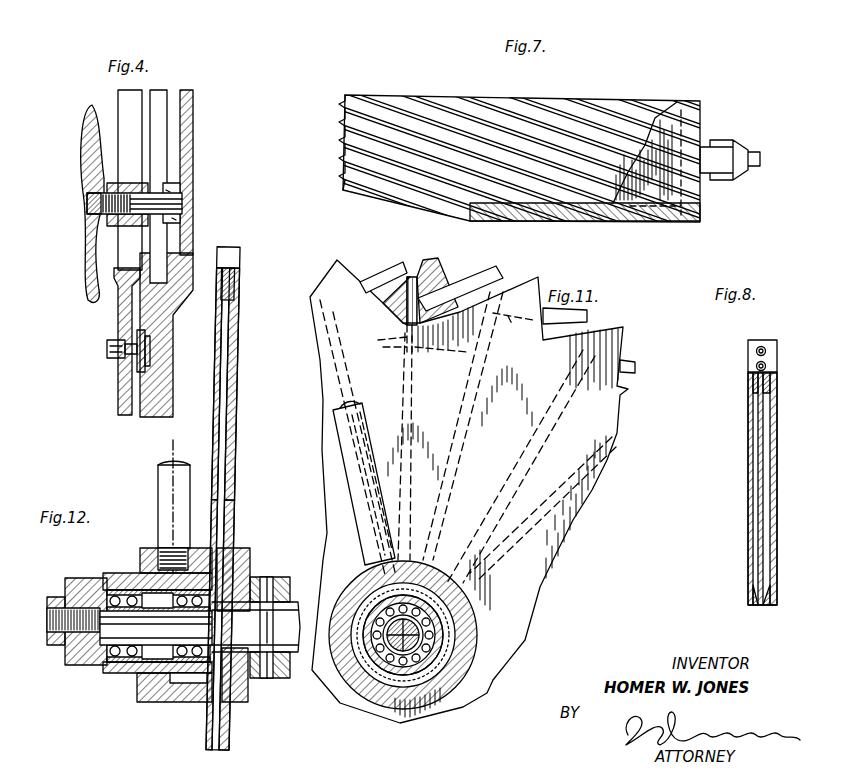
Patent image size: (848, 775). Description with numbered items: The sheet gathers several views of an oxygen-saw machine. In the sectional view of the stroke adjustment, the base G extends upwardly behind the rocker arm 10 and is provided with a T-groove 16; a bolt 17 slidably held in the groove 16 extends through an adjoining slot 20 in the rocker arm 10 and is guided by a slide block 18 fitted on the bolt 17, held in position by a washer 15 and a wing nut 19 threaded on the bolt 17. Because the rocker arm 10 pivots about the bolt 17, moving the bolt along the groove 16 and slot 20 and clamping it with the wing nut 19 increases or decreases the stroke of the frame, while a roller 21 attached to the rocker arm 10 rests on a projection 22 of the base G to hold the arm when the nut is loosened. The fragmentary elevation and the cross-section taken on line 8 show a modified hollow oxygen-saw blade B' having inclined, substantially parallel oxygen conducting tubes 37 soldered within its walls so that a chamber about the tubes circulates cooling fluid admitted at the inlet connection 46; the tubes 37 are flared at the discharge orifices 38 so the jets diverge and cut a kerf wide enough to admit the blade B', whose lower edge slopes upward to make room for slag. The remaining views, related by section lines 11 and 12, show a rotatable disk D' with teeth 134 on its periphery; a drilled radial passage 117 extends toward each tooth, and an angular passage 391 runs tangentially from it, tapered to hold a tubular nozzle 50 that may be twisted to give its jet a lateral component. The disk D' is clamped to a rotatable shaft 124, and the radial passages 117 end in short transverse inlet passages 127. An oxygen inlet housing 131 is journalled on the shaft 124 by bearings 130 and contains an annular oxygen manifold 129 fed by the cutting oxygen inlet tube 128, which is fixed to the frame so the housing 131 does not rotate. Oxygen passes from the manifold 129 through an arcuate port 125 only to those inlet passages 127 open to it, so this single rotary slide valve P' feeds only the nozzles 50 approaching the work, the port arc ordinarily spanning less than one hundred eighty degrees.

In FIG. 4, the rocker arm 10 is at (118, 322).
In FIG. 4, the washer 15 is at (107, 222).
In FIG. 4, the T-groove 16 is at (176, 145).
In FIG. 4, the bolt 17 is at (87, 200).
In FIG. 4, the slide block 18 is at (107, 186).
In FIG. 4, the wing nut 19 is at (84, 270).
In FIG. 4, the slot 20 is at (118, 94).
In FIG. 4, the roller 21 is at (158, 322).
In FIG. 4, the projection 22 is at (148, 388).
In FIG. 4, the base G is at (186, 209).
In FIG. 4, the disk D' is at (241, 374).
In FIG. 11, the disk D' is at (552, 596).
In FIG. 12, the disk D' is at (237, 627).
In FIG. 4, the radial passage 117 is at (228, 423).
In FIG. 11, the radial passage 117 is at (400, 322).
In FIG. 7, the oxygen conducting tubes 37 is at (462, 100).
In FIG. 8, the oxygen conducting tubes 37 is at (758, 432).
In FIG. 7, the discharge orifices 38 is at (405, 203).
In FIG. 8, the discharge orifices 38 is at (760, 607).
In FIG. 7, the section line 8— 8 is at (618, 94).
In FIG. 7, the hollow oxygen-saw blade B' is at (709, 83).
In FIG. 8, the hollow oxygen-saw blade B' is at (780, 358).
In FIG. 7, the inlet connection 46 is at (728, 140).
In FIG. 11, the section line 12— 12 is at (338, 365).
In FIG. 11, the tubular insert or nozzle 50 is at (380, 272).
In FIG. 11, the angular passage 391 is at (413, 276).
In FIG. 11, the teeth 134 is at (422, 300).
In FIG. 11, the cutting oxygen inlet tube 128 is at (353, 474).
In FIG. 12, the cutting oxygen inlet tube 128 is at (158, 490).
In FIG. 11, the rotatable shaft 124 is at (415, 630).
In FIG. 12, the rotatable shaft 124 is at (297, 602).
In FIG. 11, the arcuate port 125 is at (450, 640).
In FIG. 12, the arcuate port 125 is at (212, 675).
In FIG. 11, the bearings 130 is at (377, 653).
In FIG. 12, the bearings 130 is at (187, 647).
In FIG. 11, the annular chamber or oxygen manifold 129 is at (397, 680).
In FIG. 12, the annular chamber or oxygen manifold 129 is at (140, 573).
In FIG. 12, the inlet passages 127 is at (221, 578).
In FIG. 12, the oxygen inlet housing 131 is at (143, 693).
In FIG. 12, the section line 11— 11 is at (168, 456).
In FIG. 12, the rotary slide valve P' is at (192, 719).